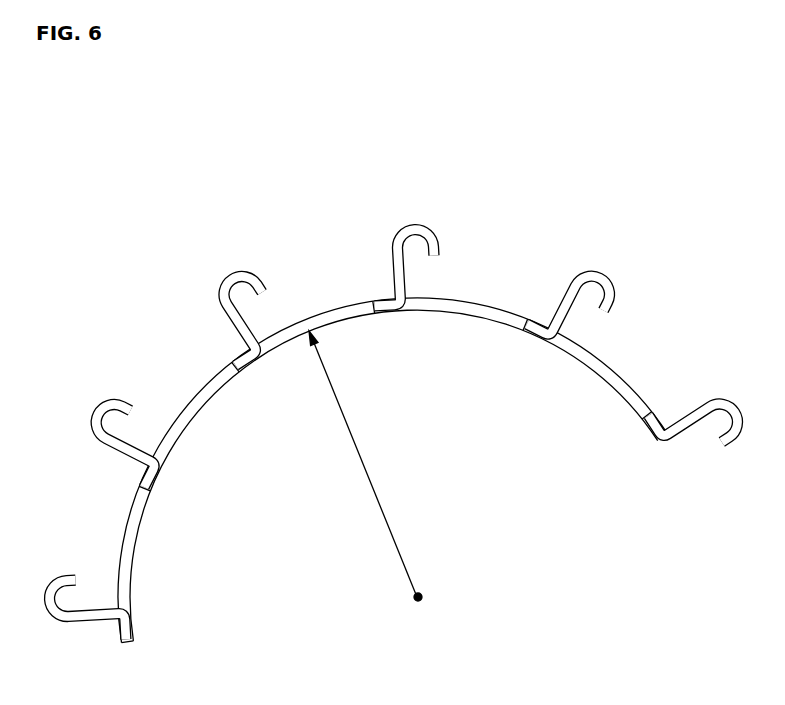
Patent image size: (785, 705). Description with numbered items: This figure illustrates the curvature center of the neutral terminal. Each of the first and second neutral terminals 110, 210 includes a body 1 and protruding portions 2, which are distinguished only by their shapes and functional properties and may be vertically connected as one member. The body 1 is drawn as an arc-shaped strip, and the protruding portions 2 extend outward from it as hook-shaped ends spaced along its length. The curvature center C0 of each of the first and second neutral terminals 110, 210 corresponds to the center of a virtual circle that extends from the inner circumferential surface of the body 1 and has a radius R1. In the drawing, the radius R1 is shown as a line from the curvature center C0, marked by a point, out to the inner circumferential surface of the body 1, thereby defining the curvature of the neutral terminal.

The body 1 is at (357, 302).
The protruding portions 2 is at (236, 268).
The first neutral terminal 110 is at (397, 358).
The second neutral terminal 210 is at (397, 358).
The radius R1 is at (363, 464).
The curvature center C0 is at (436, 597).